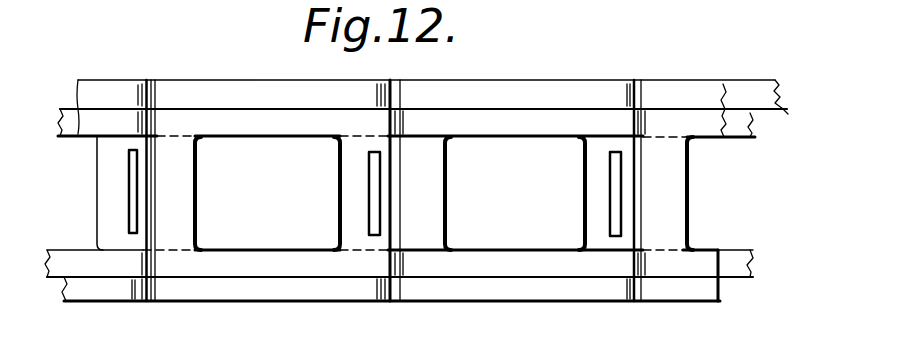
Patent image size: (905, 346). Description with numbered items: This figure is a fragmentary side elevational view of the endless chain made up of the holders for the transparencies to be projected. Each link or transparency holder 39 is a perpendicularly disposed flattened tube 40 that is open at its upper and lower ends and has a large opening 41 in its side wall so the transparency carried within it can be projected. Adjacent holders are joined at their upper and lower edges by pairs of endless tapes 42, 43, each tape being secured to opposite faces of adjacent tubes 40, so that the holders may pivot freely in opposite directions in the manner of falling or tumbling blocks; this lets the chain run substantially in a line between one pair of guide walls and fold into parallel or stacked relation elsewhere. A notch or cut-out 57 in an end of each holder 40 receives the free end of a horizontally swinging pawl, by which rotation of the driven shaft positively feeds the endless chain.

The transparency holder 39 is at (253, 64).
The flattened tube 40 is at (552, 97).
The opening 41 is at (445, 178).
The endless tape 42 is at (355, 74).
The endless tape 43 is at (474, 120).
The notch or cut-out 57 is at (369, 186).